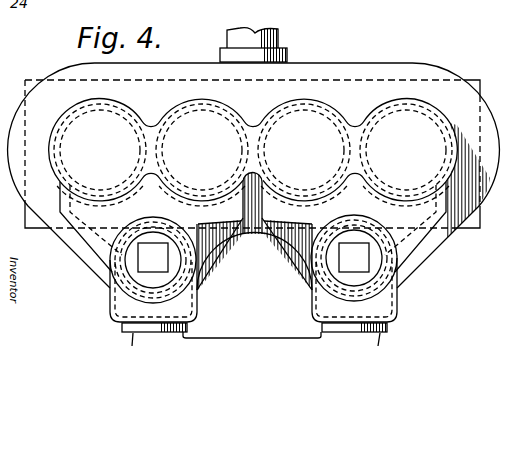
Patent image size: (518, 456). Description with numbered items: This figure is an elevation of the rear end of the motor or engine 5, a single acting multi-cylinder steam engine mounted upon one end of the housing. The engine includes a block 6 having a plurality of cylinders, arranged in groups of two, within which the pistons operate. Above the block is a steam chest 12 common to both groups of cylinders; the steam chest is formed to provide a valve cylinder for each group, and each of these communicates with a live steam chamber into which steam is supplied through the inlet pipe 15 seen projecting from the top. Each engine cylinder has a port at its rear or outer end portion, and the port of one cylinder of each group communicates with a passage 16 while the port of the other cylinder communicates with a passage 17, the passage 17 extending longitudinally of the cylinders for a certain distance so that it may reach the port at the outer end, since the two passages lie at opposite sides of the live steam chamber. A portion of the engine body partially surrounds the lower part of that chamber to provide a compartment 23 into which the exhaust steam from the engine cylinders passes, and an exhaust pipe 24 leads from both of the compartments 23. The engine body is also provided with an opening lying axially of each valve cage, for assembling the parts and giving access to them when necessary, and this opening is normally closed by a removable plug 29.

The motor or engine 5 is at (430, 72).
The block 6 is at (368, 117).
The steam chest 12 is at (355, 67).
The inlet pipe 15 is at (278, 40).
The passage 16 is at (95, 250).
The passage 17 is at (205, 205).
The compartment 23 is at (198, 303).
The exhaust pipe 24 is at (258, 346).
The removable plug 29 is at (142, 237).